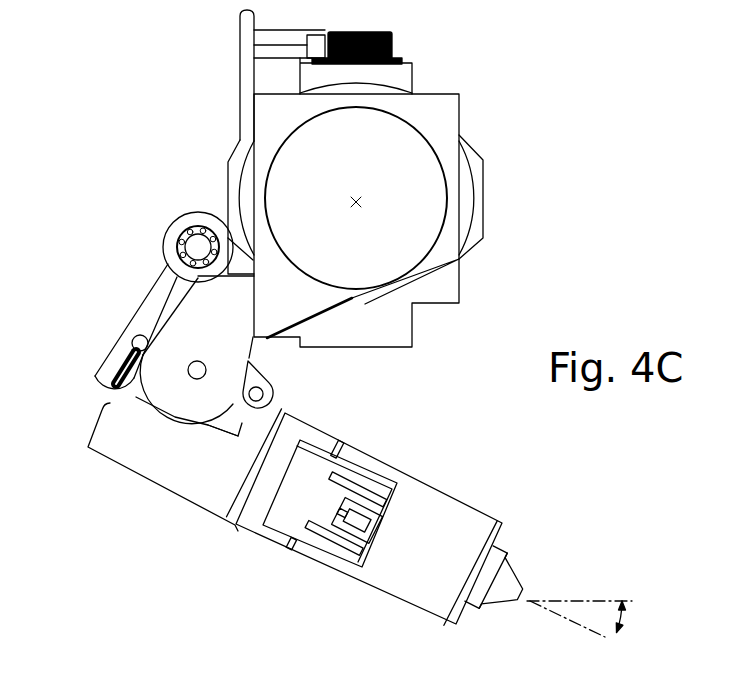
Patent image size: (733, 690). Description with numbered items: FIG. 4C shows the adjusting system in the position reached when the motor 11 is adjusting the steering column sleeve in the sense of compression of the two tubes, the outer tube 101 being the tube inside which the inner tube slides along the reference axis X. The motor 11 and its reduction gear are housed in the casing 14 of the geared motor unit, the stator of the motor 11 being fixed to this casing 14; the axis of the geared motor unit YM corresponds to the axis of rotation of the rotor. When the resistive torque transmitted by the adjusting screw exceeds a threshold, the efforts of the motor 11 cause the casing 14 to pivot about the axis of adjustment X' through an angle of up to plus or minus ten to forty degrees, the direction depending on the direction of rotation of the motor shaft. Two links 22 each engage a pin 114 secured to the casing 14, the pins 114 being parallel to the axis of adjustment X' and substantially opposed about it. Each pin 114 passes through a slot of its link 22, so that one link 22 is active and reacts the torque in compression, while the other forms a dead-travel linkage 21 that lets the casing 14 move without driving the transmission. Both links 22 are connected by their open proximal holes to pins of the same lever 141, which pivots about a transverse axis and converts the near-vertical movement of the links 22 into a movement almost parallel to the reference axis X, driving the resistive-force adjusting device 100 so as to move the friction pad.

The lever 141 is at (245, 74).
The resistive-force adjusting device 100 is at (400, 36).
The outer tube 101 is at (468, 124).
The reference axis X is at (399, 198).
The dead-travel linkage 21 is at (235, 318).
The link 22 is at (157, 292).
The pin 114 is at (126, 335).
The axis of adjustment X' is at (127, 354).
The casing 14 is at (160, 486).
The motor 11 is at (408, 578).
The axis of the geared motor unit YM is at (583, 627).